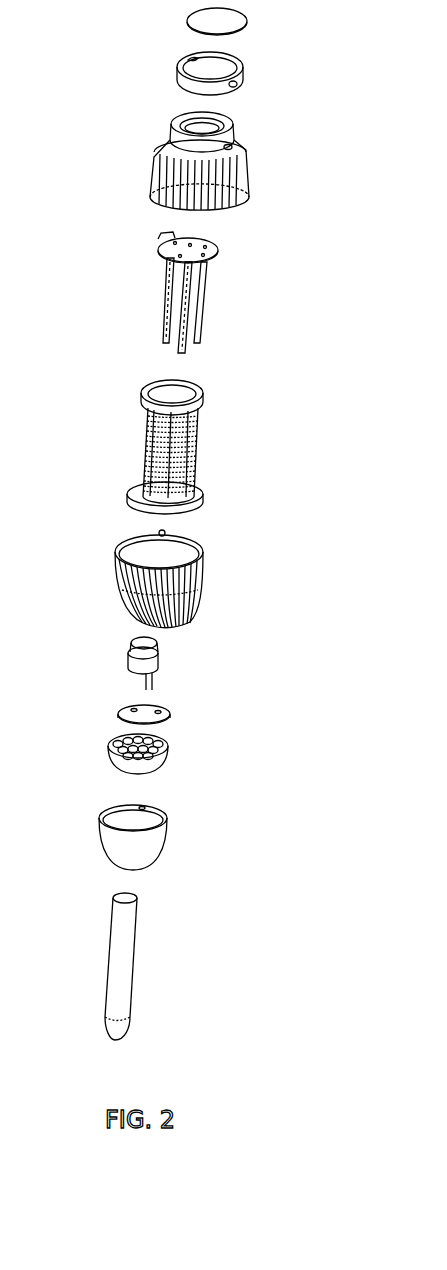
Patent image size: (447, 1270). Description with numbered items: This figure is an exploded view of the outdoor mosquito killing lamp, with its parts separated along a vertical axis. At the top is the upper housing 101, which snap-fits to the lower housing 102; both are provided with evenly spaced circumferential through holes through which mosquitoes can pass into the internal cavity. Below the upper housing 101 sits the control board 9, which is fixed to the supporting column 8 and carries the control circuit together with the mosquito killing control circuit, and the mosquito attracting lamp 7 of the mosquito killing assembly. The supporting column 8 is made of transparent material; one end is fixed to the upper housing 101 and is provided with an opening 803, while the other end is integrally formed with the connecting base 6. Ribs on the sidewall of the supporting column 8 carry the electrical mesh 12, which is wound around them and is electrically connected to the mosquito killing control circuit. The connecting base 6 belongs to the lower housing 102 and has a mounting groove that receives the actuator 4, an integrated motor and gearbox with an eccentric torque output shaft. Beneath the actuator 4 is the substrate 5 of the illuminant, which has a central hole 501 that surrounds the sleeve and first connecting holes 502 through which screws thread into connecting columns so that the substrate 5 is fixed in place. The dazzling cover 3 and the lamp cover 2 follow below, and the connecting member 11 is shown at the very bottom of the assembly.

The upper housing 101 is at (246, 163).
The control board 9 is at (218, 246).
The mosquito attracting lamp 7 is at (200, 305).
The opening 803 is at (182, 395).
The supporting column 8 is at (200, 440).
The electrical mesh 12 is at (196, 425).
The connecting base 6 is at (196, 490).
The lower housing 102 is at (202, 576).
The actuator 4 is at (160, 655).
The substrate 5 is at (172, 713).
The central hole 501 is at (134, 709).
The first connecting hole 502 is at (159, 712).
The dazzling cover 3 is at (165, 762).
The lamp cover 2 is at (153, 842).
The connecting member 11 is at (127, 960).